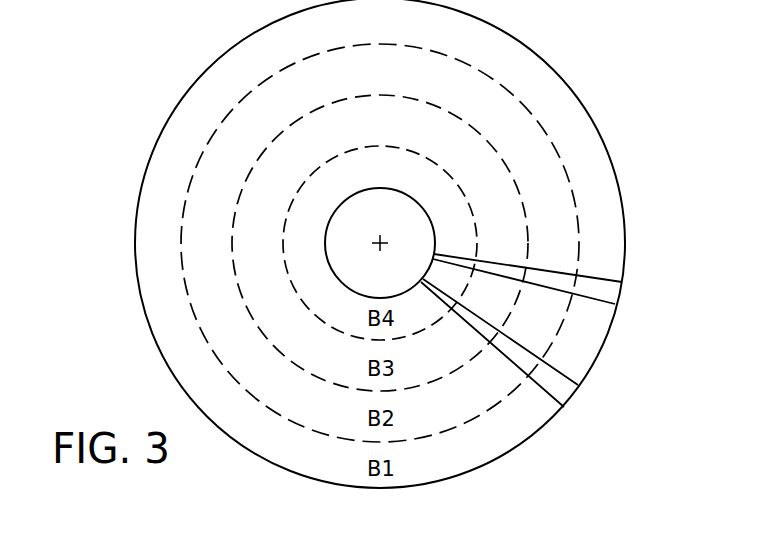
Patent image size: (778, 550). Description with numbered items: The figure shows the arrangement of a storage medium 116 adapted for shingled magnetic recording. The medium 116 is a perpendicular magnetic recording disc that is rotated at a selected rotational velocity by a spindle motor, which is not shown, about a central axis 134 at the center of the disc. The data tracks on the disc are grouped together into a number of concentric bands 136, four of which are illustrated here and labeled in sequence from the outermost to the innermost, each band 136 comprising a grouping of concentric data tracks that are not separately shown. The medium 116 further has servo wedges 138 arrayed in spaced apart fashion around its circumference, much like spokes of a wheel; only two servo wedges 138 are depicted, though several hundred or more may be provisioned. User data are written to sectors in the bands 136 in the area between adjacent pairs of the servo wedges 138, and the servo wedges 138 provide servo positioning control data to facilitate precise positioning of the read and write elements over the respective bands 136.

The medium 116 is at (603, 107).
The central axis 134 is at (382, 251).
The band 136 is at (160, 217).
The servo wedge 138 is at (608, 297).